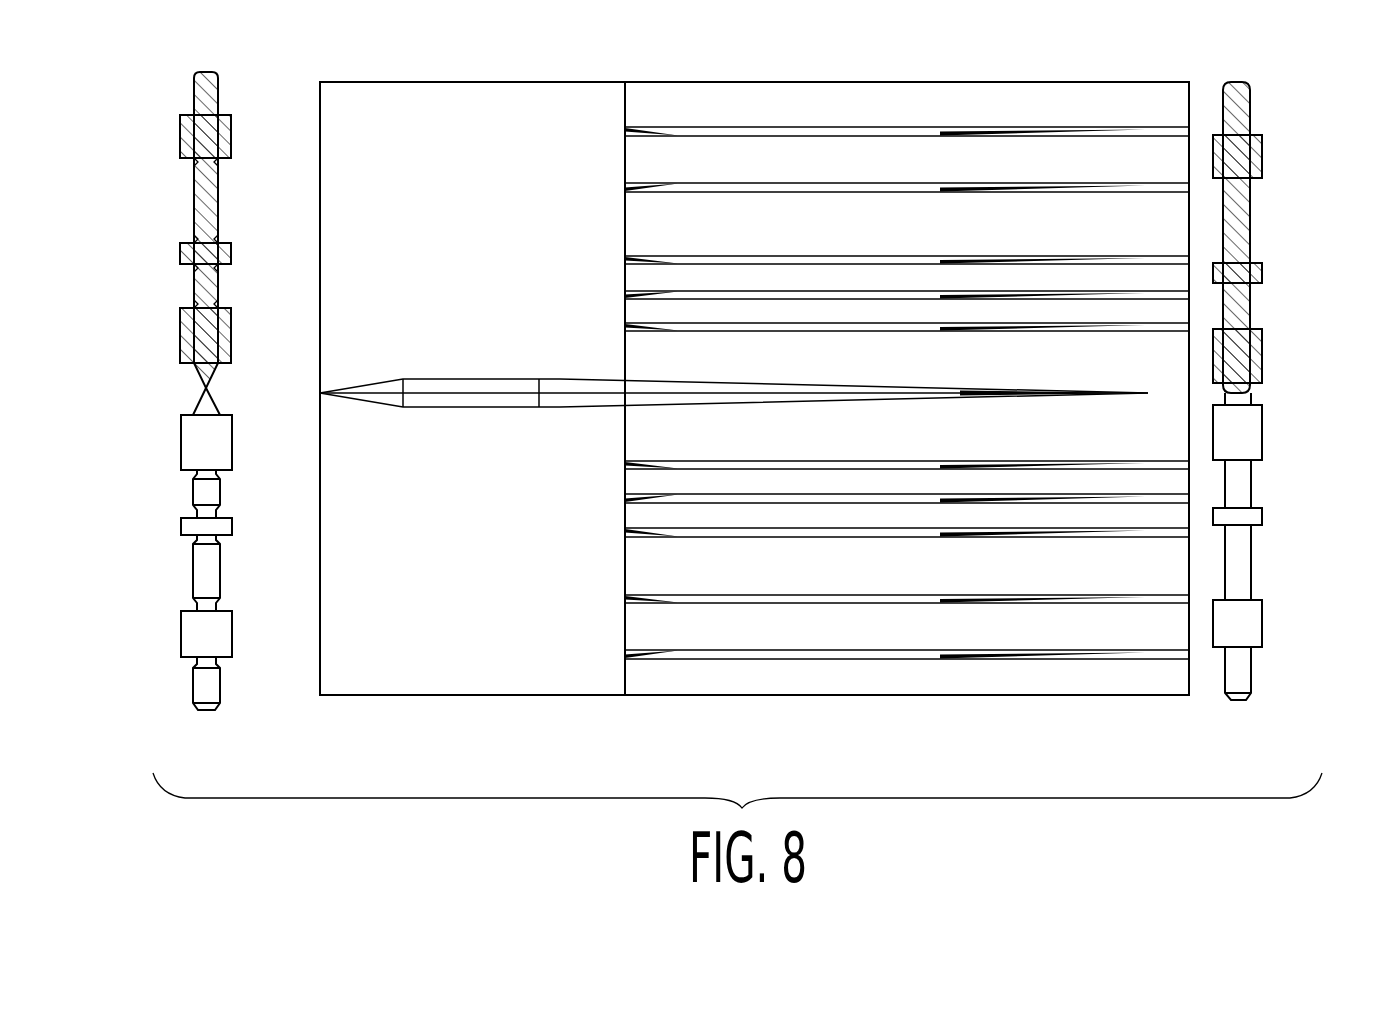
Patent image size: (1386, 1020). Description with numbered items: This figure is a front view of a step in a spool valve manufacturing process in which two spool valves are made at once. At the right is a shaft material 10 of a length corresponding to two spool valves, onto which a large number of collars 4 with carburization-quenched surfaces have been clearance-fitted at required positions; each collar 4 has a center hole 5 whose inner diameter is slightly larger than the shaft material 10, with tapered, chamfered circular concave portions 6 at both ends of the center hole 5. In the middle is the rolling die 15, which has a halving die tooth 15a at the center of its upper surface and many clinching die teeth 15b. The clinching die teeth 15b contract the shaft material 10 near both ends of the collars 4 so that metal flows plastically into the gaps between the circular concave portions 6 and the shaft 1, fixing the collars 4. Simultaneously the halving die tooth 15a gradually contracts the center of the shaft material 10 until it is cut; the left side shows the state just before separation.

The shaft 1 is at (228, 196).
The collars 4 is at (225, 133).
The center holes 5 is at (1243, 142).
The circular concave portions 6 is at (1245, 192).
The shaft material 10 is at (1301, 374).
The rolling die 15 is at (490, 680).
The halving die tooth 15a is at (556, 382).
The clinching die teeth 15b is at (865, 185).